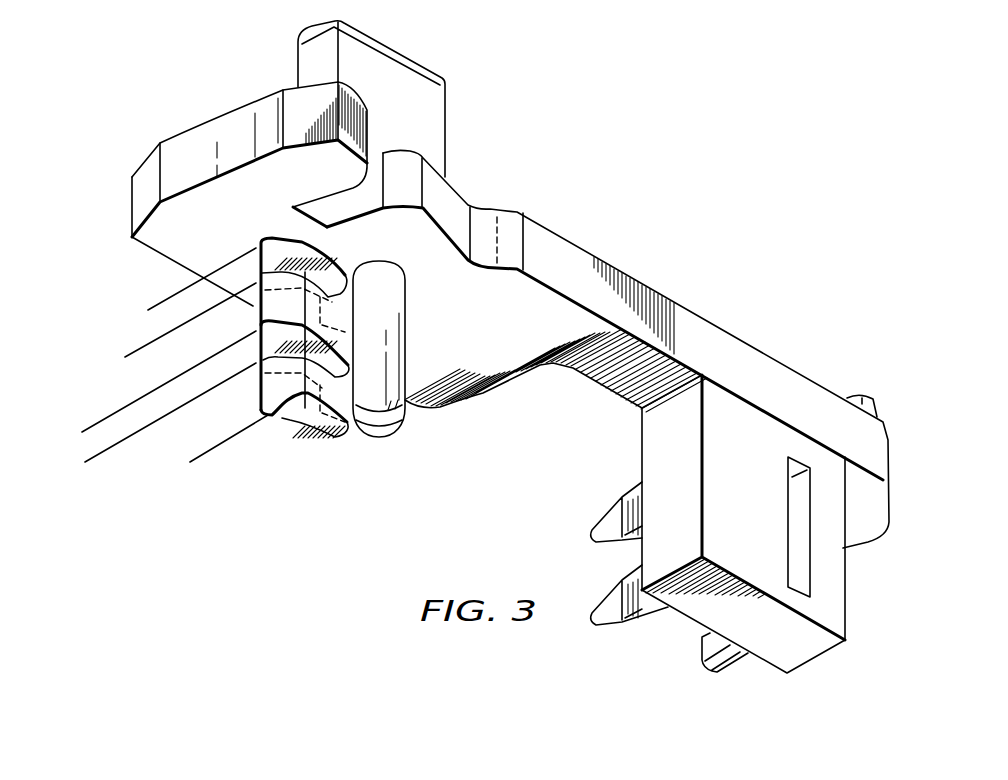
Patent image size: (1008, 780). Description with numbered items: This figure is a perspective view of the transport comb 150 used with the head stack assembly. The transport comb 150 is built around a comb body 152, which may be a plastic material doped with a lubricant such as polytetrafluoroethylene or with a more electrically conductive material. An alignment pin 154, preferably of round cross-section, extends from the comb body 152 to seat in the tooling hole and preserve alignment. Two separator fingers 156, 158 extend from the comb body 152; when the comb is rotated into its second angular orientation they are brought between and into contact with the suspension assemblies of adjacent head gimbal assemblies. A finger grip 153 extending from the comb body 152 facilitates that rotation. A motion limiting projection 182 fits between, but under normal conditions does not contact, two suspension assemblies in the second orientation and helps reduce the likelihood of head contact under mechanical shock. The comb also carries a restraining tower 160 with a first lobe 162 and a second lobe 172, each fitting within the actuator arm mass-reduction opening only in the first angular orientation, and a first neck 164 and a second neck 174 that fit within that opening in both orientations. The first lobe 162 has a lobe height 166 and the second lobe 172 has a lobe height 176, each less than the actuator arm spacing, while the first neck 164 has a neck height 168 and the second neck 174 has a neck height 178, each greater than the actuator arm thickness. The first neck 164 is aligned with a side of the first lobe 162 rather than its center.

The transport comb 150 is at (637, 128).
The comb body 152 is at (735, 353).
The finger grip 153 is at (445, 128).
The alignment pin 154 is at (379, 439).
The separator finger 156 is at (598, 523).
The separator finger 158 is at (648, 610).
The restraining tower 160 is at (291, 415).
The first lobe 162 is at (333, 317).
The first neck 164 is at (278, 248).
The lobe height 166 is at (127, 404).
The neck height 168 is at (158, 339).
The second lobe 172 is at (365, 403).
The second neck 174 is at (333, 370).
The lobe height 176 is at (198, 399).
The neck height 178 is at (92, 459).
The motion limiting projection 182 is at (727, 660).